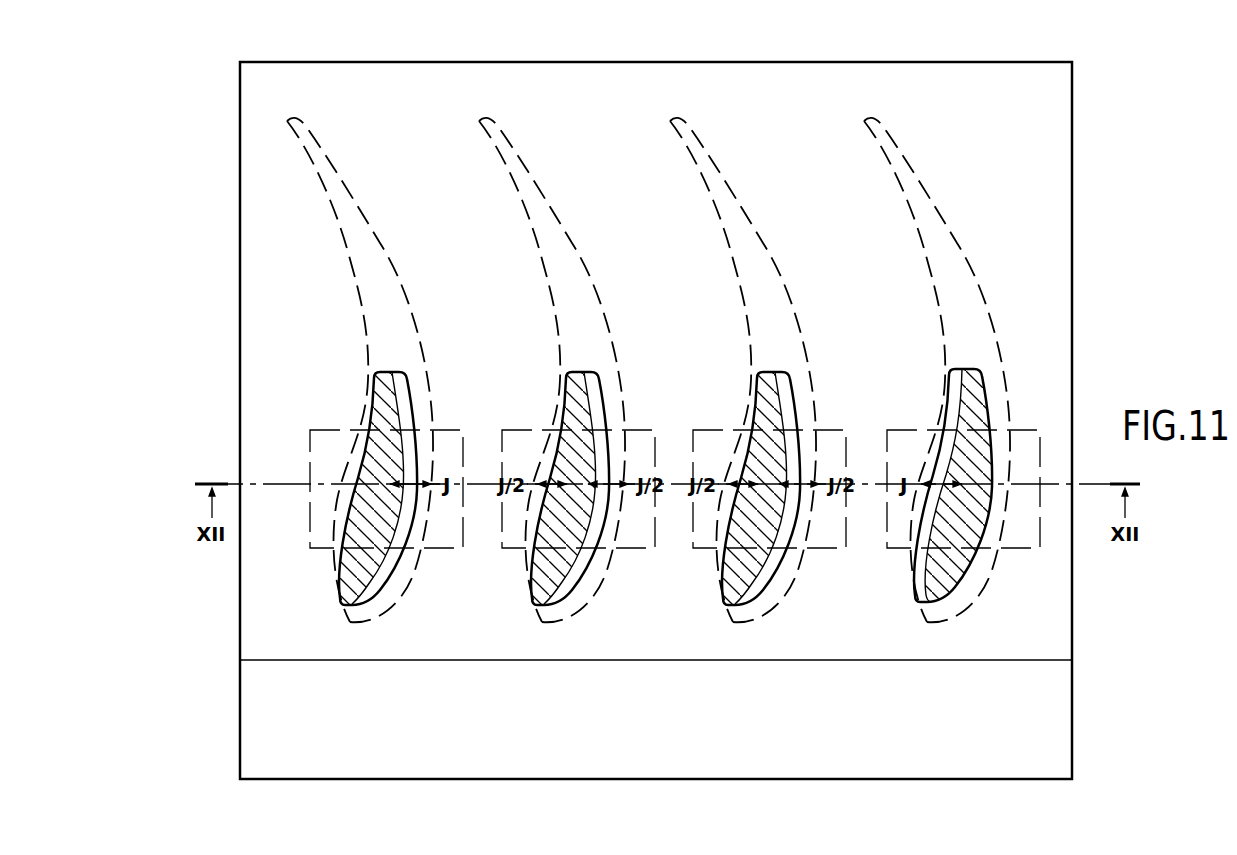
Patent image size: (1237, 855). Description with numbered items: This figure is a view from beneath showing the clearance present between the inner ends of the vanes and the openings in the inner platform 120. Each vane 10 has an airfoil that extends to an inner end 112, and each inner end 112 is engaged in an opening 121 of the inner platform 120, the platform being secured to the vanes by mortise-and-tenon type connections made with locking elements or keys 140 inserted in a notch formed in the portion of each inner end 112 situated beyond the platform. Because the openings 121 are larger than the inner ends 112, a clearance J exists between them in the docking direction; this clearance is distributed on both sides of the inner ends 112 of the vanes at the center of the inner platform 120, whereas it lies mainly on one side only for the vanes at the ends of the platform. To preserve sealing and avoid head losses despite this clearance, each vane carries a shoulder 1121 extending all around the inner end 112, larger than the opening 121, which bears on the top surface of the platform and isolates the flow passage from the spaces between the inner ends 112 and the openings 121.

The blade (airfoil outline) 10 is at (385, 241).
The shoulder 1121 is at (416, 325).
The inner end 112 is at (352, 583).
The inner platform 120 is at (236, 277).
The opening 121 is at (386, 580).
The locking element or key 140 is at (457, 430).